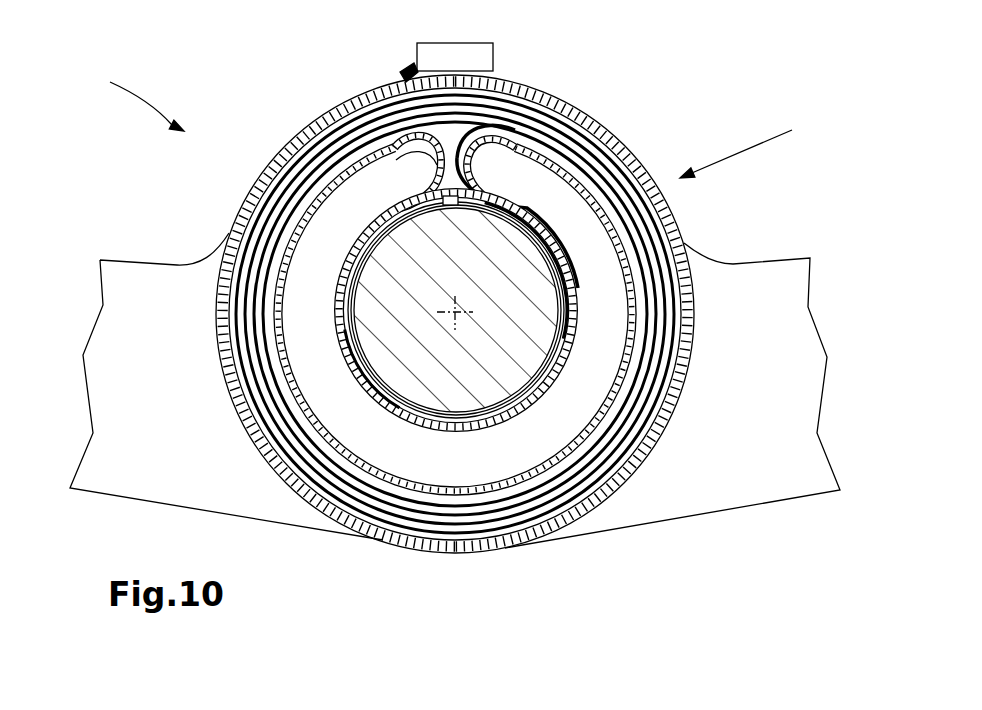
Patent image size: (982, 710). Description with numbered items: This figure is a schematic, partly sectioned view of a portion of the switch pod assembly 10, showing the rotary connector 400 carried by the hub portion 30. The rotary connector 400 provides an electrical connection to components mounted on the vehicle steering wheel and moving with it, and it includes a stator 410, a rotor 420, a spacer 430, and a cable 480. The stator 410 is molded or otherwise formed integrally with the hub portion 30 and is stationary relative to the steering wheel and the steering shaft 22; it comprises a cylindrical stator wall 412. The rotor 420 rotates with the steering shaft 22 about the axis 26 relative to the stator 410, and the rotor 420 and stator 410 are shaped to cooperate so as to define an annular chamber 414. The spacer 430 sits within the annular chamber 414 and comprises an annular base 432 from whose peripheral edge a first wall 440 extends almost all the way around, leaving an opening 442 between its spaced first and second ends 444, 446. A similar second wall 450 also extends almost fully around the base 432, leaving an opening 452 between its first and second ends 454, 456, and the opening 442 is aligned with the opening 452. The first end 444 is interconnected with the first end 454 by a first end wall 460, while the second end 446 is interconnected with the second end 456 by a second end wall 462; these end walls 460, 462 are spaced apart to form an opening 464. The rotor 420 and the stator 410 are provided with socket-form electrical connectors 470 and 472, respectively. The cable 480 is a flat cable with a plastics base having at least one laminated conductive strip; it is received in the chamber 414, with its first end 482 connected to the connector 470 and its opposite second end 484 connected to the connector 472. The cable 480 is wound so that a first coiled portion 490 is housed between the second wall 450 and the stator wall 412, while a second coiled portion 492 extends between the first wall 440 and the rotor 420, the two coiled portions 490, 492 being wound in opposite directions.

The switch pod assembly 10 is at (132, 98).
The steering shaft 22 is at (535, 292).
The axis 26 is at (466, 327).
The hub portion 30 is at (234, 232).
The rotary connector 400 is at (764, 142).
The stator 410 is at (317, 500).
The stator wall 412 is at (237, 403).
The annular chamber 414 is at (407, 104).
The rotor 420 is at (415, 437).
The spacer 430 is at (470, 463).
The annular base 432 is at (480, 497).
The first wall 440 is at (507, 421).
The opening 442 is at (482, 208).
The first end 444 is at (418, 193).
The second end 446 is at (600, 168).
The second wall 450 is at (630, 318).
The opening 452 is at (452, 130).
The first end 454 is at (335, 118).
The second end 456 is at (535, 138).
The first end wall 460 is at (317, 157).
The second end wall 462 is at (560, 160).
The opening 464 is at (503, 127).
The electrical connector 470 is at (453, 205).
The electrical connector 472 is at (458, 57).
The cable 480 is at (662, 328).
The first end 482 is at (410, 210).
The second end 484 is at (410, 72).
The first coiled portion 490 is at (672, 300).
The second coiled portion 492 is at (673, 400).